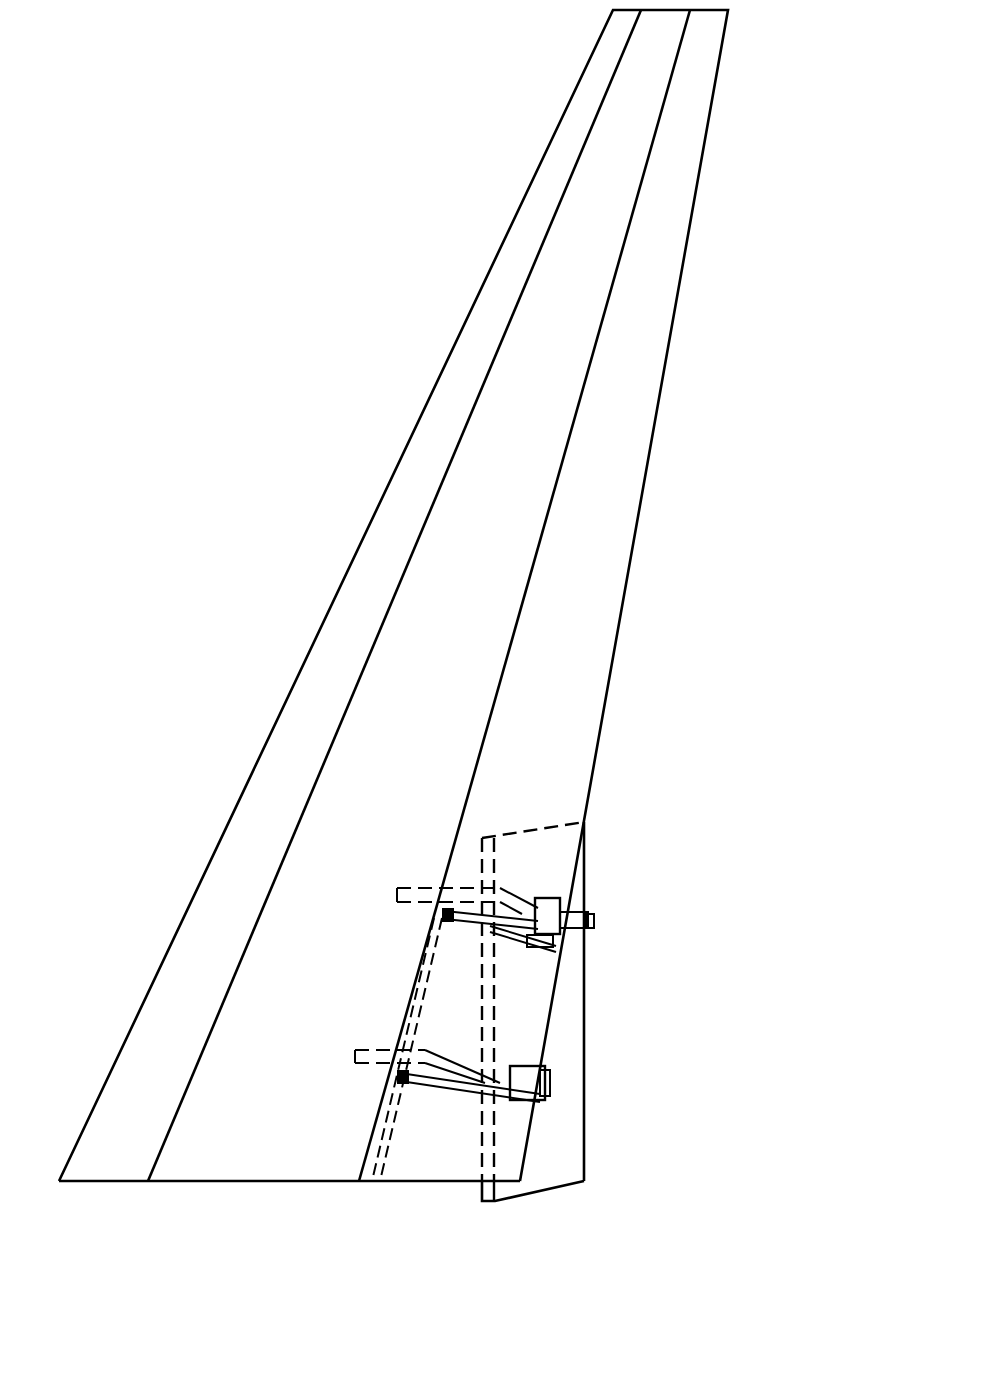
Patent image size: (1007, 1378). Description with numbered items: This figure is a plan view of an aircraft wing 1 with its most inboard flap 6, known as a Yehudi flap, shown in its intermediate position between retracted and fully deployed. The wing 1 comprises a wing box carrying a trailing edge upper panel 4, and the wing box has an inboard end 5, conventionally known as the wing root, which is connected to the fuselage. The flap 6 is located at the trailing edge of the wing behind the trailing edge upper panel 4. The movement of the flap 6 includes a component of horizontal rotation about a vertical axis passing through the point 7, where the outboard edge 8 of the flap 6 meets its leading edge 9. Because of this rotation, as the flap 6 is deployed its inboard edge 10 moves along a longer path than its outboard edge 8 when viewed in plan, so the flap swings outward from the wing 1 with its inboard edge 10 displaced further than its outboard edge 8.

The aircraft wing 1 is at (226, 527).
The trailing edge upper panel 4 is at (573, 698).
The inboard end 5 is at (305, 1182).
The flap 6 is at (593, 991).
The point 7 is at (548, 826).
The outboard edge 8 is at (527, 830).
The leading edge 9 is at (585, 892).
The inboard edge 10 is at (545, 1190).